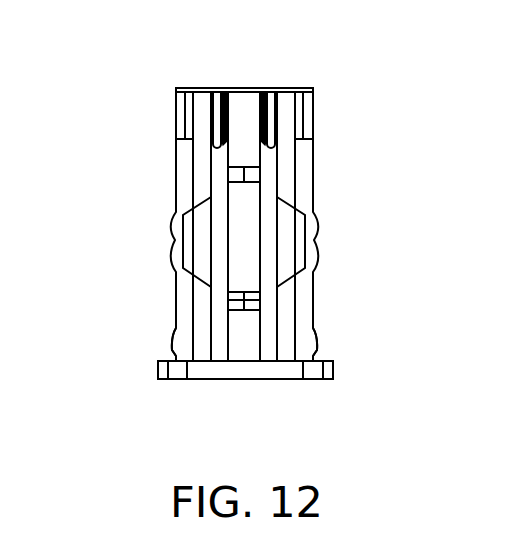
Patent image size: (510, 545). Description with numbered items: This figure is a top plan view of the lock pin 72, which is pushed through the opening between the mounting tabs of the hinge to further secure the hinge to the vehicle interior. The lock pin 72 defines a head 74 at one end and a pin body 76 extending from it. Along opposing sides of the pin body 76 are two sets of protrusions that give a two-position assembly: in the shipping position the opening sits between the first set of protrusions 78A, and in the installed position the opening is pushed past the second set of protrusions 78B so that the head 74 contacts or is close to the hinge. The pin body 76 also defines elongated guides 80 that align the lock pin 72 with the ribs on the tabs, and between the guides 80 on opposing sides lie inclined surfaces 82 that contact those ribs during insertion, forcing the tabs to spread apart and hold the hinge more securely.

The lock pin 72 is at (313, 162).
The head 74 is at (258, 372).
The pin body 76 is at (187, 158).
The first set of protrusions 78A is at (172, 242).
The second set of protrusions 78B is at (173, 338).
The elongated guides 80 is at (212, 147).
The inclined surfaces 82 is at (238, 157).